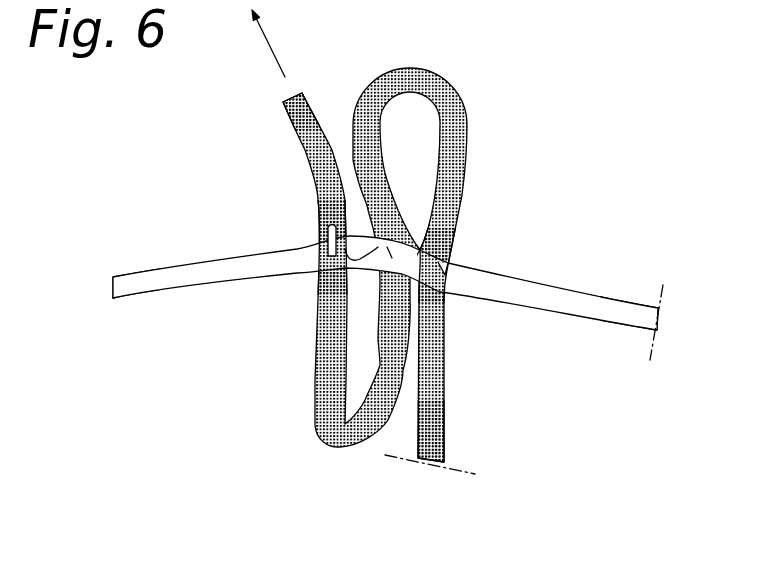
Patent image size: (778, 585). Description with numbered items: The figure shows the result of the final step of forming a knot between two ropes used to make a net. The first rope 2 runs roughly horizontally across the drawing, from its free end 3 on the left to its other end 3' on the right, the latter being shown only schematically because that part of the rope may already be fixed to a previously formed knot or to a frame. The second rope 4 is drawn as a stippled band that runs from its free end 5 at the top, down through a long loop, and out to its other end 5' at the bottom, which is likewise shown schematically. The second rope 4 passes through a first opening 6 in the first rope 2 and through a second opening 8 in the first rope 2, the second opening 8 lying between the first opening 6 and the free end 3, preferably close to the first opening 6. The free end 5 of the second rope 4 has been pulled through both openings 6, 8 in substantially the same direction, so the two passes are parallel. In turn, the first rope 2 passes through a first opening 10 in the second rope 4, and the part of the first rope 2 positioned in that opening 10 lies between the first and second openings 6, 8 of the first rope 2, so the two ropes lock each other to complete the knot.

The first rope 2 is at (532, 306).
The free end of the first rope 3 is at (375, 282).
The other end of the first rope 3' is at (388, 298).
The second rope 4 is at (410, 78).
The free end of the second rope 5 is at (354, 265).
The other end of the second rope 5' is at (387, 271).
The first opening in the first rope 6 is at (445, 258).
The second opening in the first rope 8 is at (323, 232).
The first opening in the second rope 10 is at (418, 247).